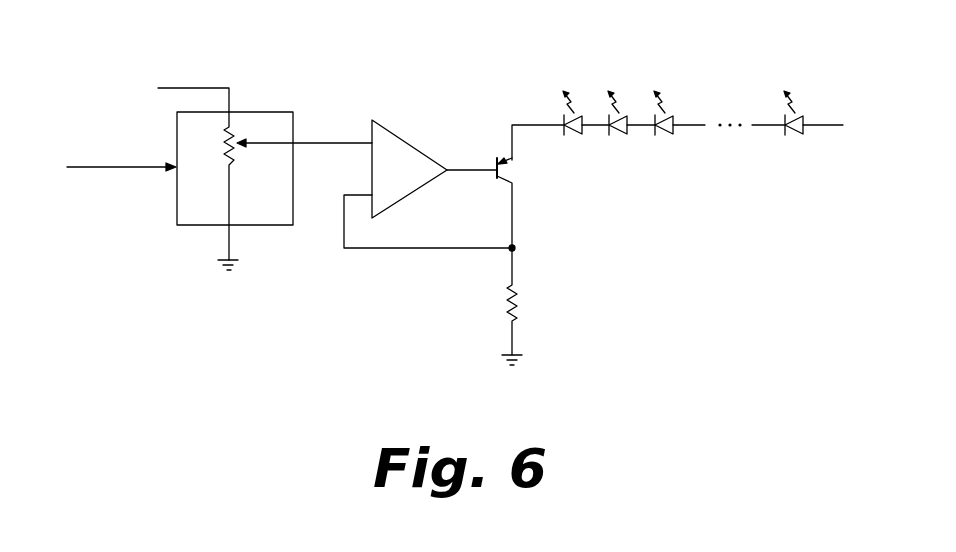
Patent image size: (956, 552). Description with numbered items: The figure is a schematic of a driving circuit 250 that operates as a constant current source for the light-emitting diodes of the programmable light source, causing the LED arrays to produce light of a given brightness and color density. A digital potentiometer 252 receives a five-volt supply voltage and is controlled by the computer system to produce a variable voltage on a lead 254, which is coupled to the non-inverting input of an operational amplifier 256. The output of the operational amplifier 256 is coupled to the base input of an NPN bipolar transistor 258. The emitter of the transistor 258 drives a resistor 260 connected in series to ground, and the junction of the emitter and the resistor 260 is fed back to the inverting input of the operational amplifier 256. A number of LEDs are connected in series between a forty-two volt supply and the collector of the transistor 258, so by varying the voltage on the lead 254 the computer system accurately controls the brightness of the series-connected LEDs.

The driving circuit 250 is at (428, 89).
The digital potentiometer 252 is at (282, 225).
The lead 254 is at (317, 141).
The operational amplifier 256 is at (418, 144).
The NPN bipolar transistor 258 is at (507, 172).
The resistor 260 is at (520, 298).